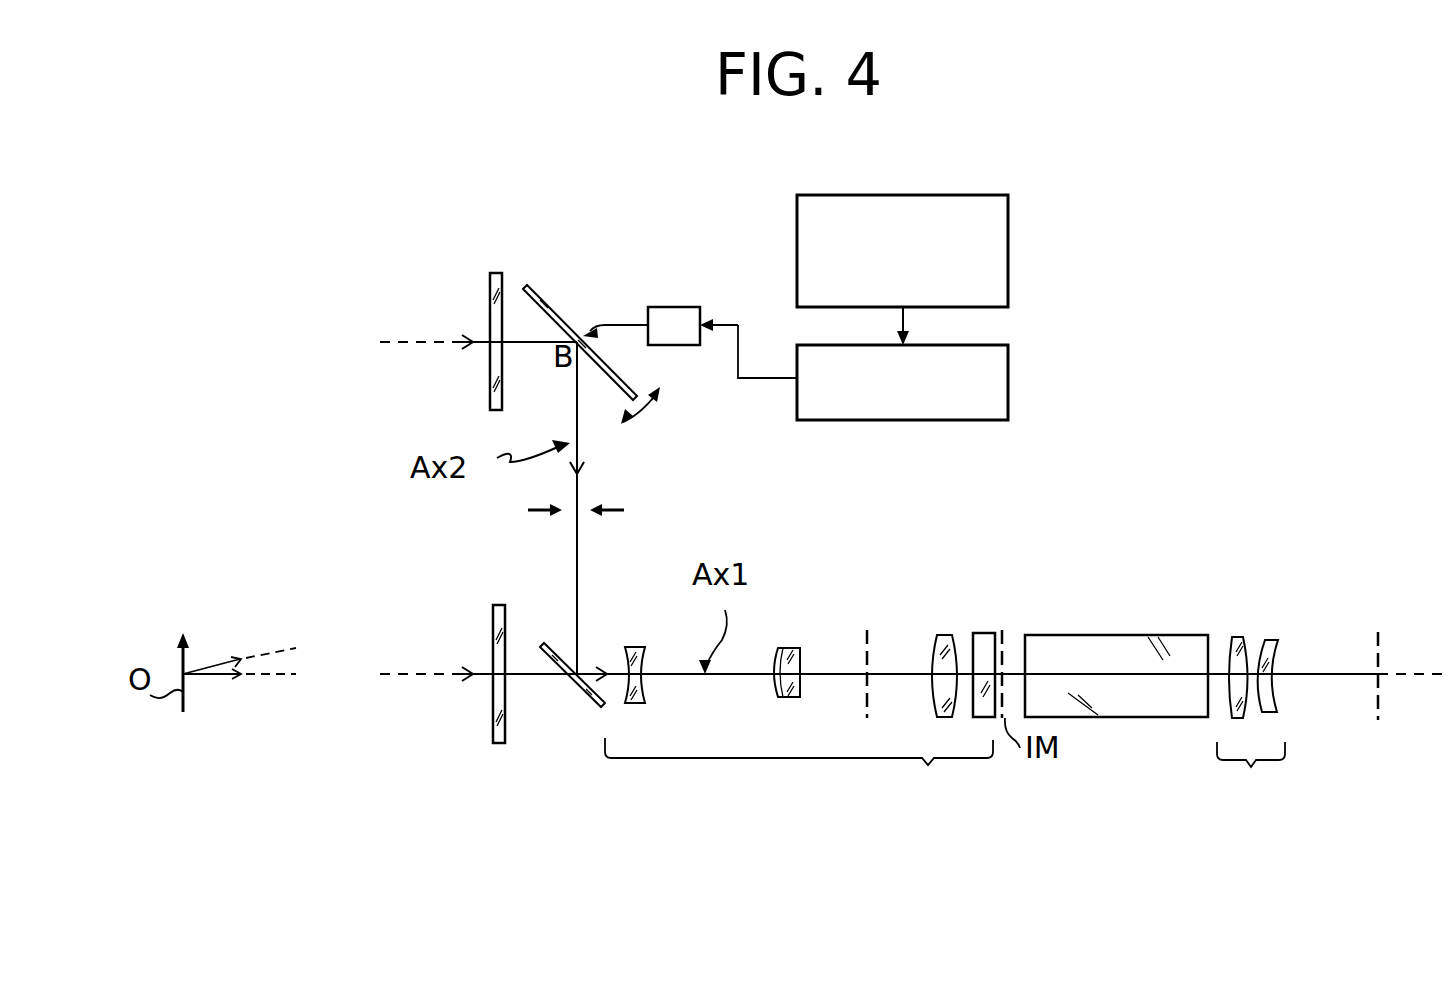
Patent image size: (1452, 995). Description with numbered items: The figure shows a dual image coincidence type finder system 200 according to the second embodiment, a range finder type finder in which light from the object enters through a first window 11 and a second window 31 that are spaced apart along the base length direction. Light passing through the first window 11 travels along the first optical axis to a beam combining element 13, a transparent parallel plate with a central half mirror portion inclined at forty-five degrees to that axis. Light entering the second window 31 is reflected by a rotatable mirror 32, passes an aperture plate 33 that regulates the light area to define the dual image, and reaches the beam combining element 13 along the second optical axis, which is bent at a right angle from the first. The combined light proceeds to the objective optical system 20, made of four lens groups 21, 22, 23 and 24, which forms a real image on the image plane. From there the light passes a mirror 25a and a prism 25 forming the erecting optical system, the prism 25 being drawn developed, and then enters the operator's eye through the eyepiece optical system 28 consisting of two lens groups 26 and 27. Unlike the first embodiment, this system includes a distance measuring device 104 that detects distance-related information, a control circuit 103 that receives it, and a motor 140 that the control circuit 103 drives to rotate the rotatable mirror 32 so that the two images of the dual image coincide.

The first window 11 is at (493, 722).
The beam combining element 13 is at (582, 690).
The objective optical system 20 is at (799, 768).
The lens group 21 is at (635, 647).
The lens group 22 is at (786, 648).
The lens group 23 is at (947, 635).
The lens group 24 is at (985, 633).
The prism 25 is at (1100, 635).
The mirror 25a is at (875, 630).
The lens group 26 is at (1238, 637).
The lens group 27 is at (1270, 640).
The eyepiece optical system 28 is at (1251, 771).
The second window 31 is at (496, 273).
The rotatable mirror 32 is at (547, 307).
The aperture plate 33 is at (624, 507).
The control circuit 103 is at (1010, 388).
The distance measuring device 104 is at (1010, 258).
The motor 140 is at (700, 278).
The dual image coincidence type finder system 200 is at (1253, 378).